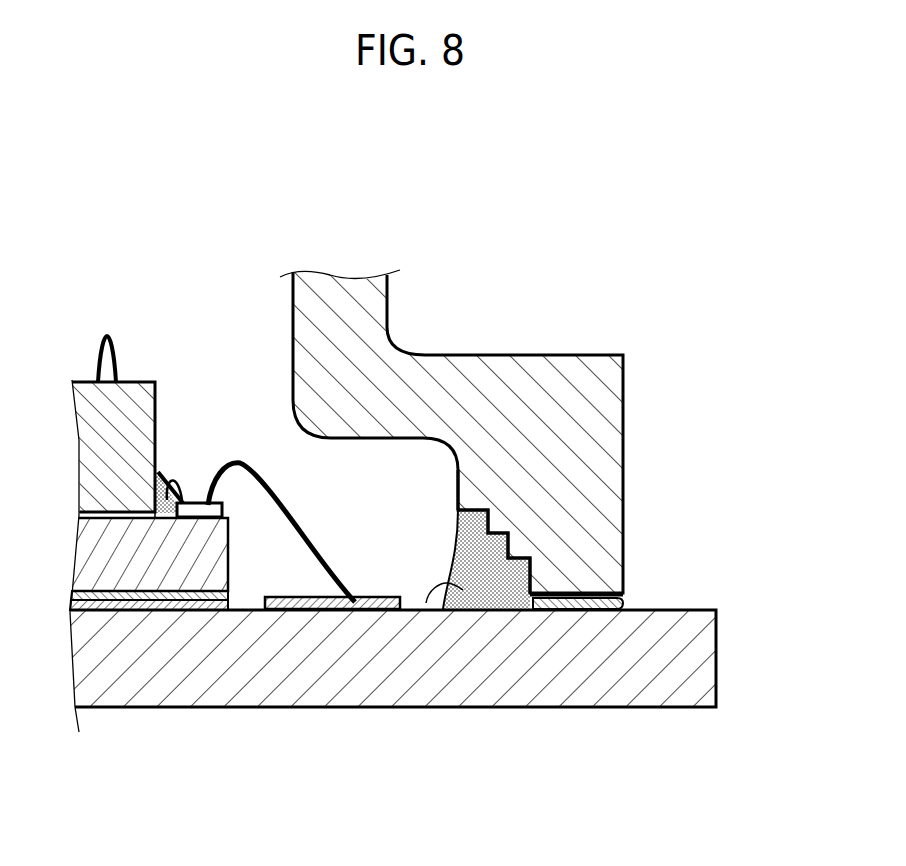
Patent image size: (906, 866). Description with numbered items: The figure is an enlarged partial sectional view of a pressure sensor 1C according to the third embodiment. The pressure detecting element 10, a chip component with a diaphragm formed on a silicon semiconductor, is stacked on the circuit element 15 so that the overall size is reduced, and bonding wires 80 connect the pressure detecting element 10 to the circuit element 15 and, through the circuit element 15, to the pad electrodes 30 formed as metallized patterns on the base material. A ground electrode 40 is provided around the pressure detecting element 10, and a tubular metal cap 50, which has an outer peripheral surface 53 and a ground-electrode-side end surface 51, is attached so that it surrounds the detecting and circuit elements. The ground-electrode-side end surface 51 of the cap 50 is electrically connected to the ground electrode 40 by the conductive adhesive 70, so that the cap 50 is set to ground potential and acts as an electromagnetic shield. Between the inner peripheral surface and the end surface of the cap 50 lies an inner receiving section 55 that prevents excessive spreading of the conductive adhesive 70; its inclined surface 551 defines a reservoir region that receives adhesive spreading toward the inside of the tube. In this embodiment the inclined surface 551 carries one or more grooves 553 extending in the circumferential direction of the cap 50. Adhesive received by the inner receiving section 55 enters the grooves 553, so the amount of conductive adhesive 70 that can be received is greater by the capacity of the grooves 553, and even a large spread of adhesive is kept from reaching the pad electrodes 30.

The pressure sensor 1C is at (512, 226).
The pressure detecting element 10 is at (135, 397).
The circuit element 15 is at (150, 577).
The pad electrodes 30 is at (306, 600).
The ground electrode 40 is at (570, 606).
The cap 50 is at (548, 372).
The ground-electrode-side end surface 51 is at (641, 624).
The outer peripheral surface 53 is at (582, 592).
The inner receiving section 55 is at (498, 580).
The conductive adhesive 70 is at (426, 603).
The bonding wires 80 is at (106, 338).
The inclined surface 551 is at (460, 511).
The grooves 553 is at (490, 527).